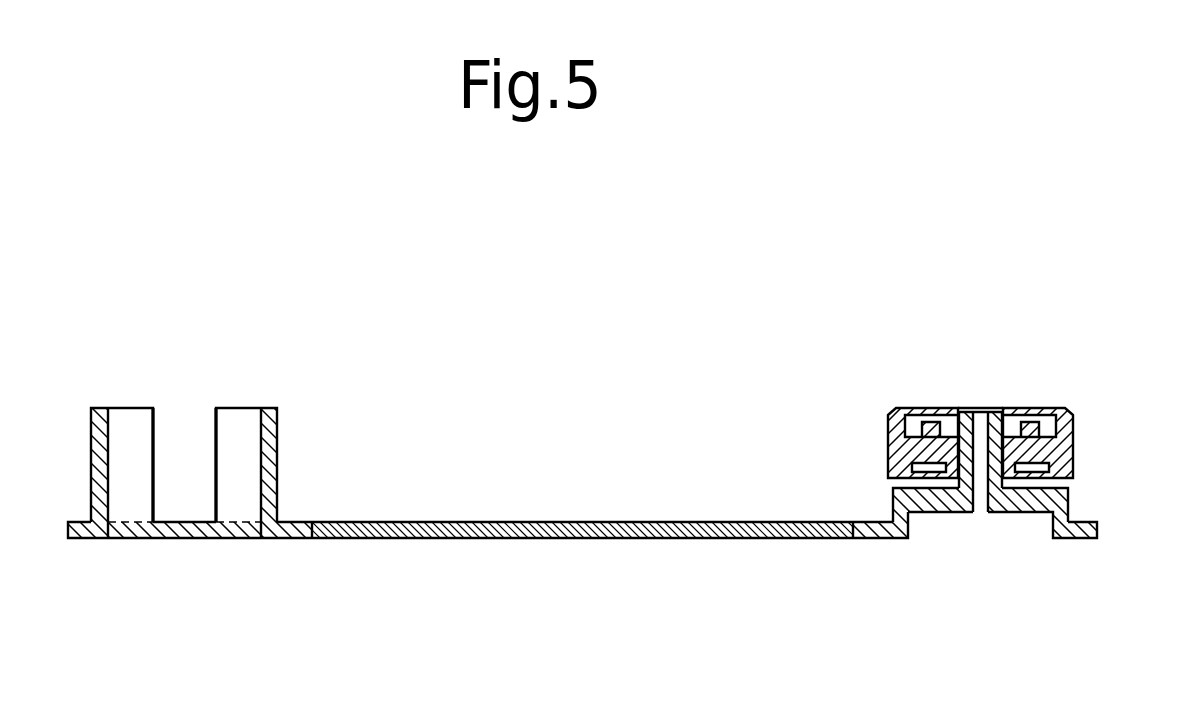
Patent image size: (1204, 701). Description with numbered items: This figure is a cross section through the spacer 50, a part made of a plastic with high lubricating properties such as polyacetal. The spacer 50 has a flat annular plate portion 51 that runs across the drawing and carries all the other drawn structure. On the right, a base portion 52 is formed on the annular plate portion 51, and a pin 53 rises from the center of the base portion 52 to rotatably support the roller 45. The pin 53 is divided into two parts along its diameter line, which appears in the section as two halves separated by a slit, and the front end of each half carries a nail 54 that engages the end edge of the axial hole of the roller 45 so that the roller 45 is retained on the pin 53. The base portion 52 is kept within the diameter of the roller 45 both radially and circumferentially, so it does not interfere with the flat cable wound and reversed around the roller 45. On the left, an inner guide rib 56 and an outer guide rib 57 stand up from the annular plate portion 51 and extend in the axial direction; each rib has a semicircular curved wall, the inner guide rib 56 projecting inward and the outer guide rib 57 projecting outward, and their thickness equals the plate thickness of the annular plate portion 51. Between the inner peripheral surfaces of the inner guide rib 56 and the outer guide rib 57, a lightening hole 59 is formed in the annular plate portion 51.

The roller 45 is at (1077, 443).
The spacer 50 is at (408, 430).
The annular plate portion 51 is at (871, 541).
The base portion 52 is at (1027, 506).
The pin 53 is at (985, 480).
The nail 54 is at (1009, 424).
The inner guide rib 56 is at (243, 418).
The outer guide rib 57 is at (129, 418).
The lightening hole 59 is at (173, 540).